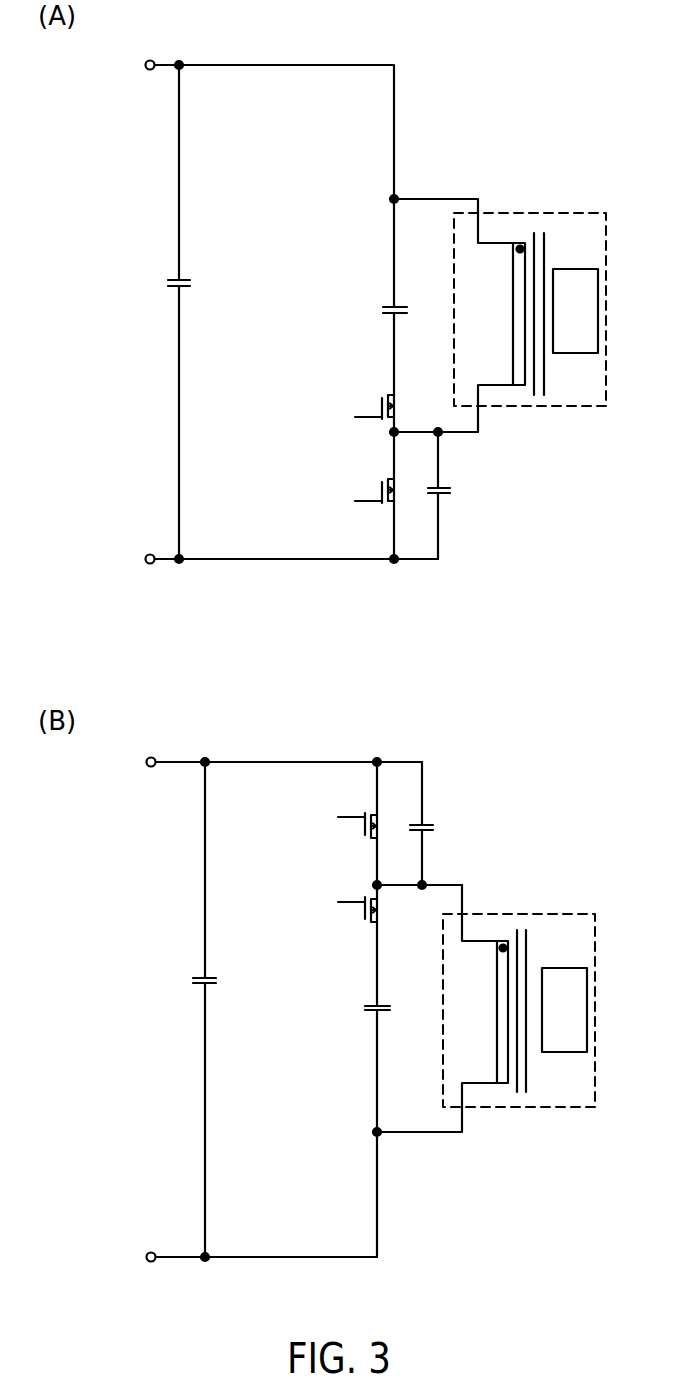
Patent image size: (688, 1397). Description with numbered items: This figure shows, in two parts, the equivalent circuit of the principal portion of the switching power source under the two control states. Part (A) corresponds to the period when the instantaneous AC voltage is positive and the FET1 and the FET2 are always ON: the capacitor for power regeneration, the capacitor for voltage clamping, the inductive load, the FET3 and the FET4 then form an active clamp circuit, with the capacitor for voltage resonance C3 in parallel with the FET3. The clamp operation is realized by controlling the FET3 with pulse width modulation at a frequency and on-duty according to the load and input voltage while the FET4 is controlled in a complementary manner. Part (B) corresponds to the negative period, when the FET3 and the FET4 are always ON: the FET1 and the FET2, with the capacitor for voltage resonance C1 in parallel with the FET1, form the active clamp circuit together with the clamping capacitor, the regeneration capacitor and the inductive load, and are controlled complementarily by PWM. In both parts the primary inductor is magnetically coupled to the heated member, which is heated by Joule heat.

The capacitor for voltage resonance C1 is at (440, 827).
The capacitor for voltage resonance C3 is at (455, 493).
The field effect transistor FET1 is at (390, 818).
The field effect transistor FET2 is at (362, 928).
The field effect transistor FET3 is at (402, 500).
The field effect transistor FET4 is at (382, 388).